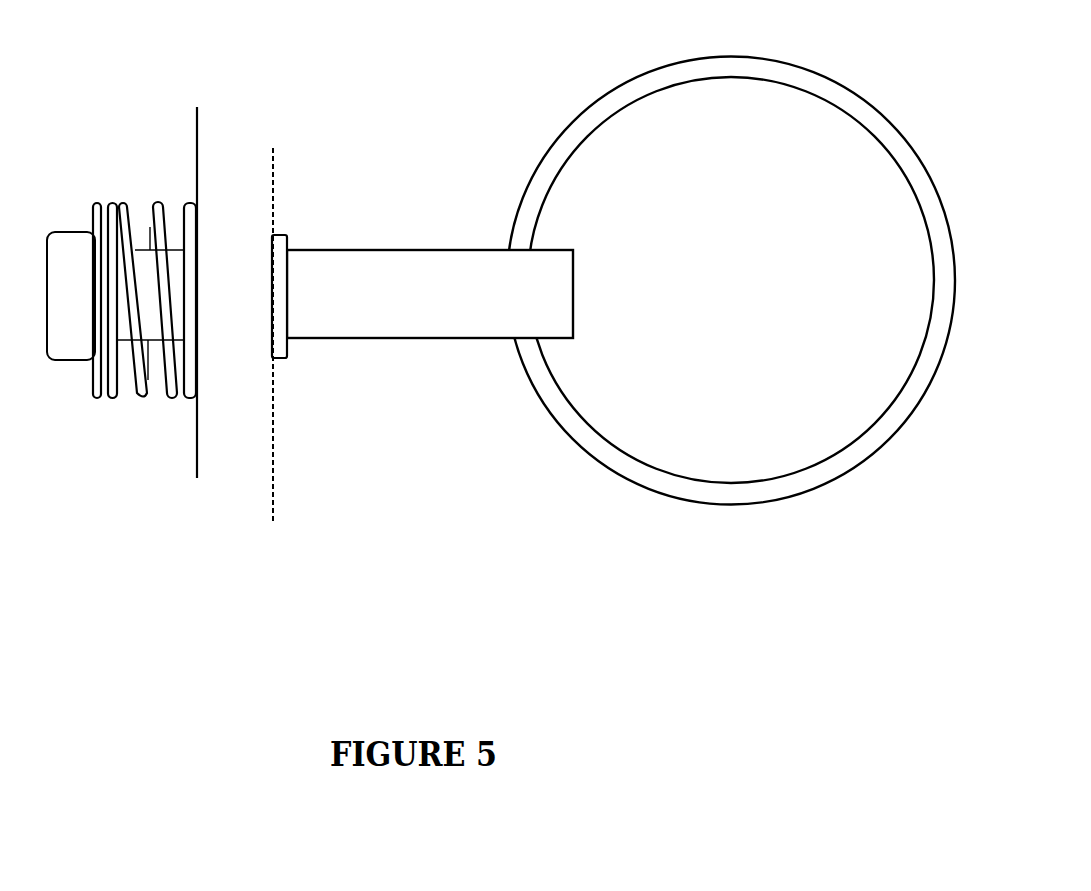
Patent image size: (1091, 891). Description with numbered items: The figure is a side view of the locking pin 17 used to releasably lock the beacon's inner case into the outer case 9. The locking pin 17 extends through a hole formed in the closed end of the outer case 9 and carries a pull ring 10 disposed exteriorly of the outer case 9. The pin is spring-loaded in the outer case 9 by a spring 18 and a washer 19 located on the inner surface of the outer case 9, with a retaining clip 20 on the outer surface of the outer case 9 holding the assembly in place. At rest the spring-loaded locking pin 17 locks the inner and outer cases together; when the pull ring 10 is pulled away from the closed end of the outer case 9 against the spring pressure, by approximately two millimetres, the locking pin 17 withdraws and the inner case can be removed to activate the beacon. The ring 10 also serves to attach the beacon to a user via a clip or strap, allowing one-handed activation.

The outer case 9 is at (275, 468).
The pull ring 10 is at (742, 58).
The locking pin 17 is at (366, 252).
The spring 18 is at (142, 399).
The washer 19 is at (98, 395).
The retaining clip 20 is at (282, 358).